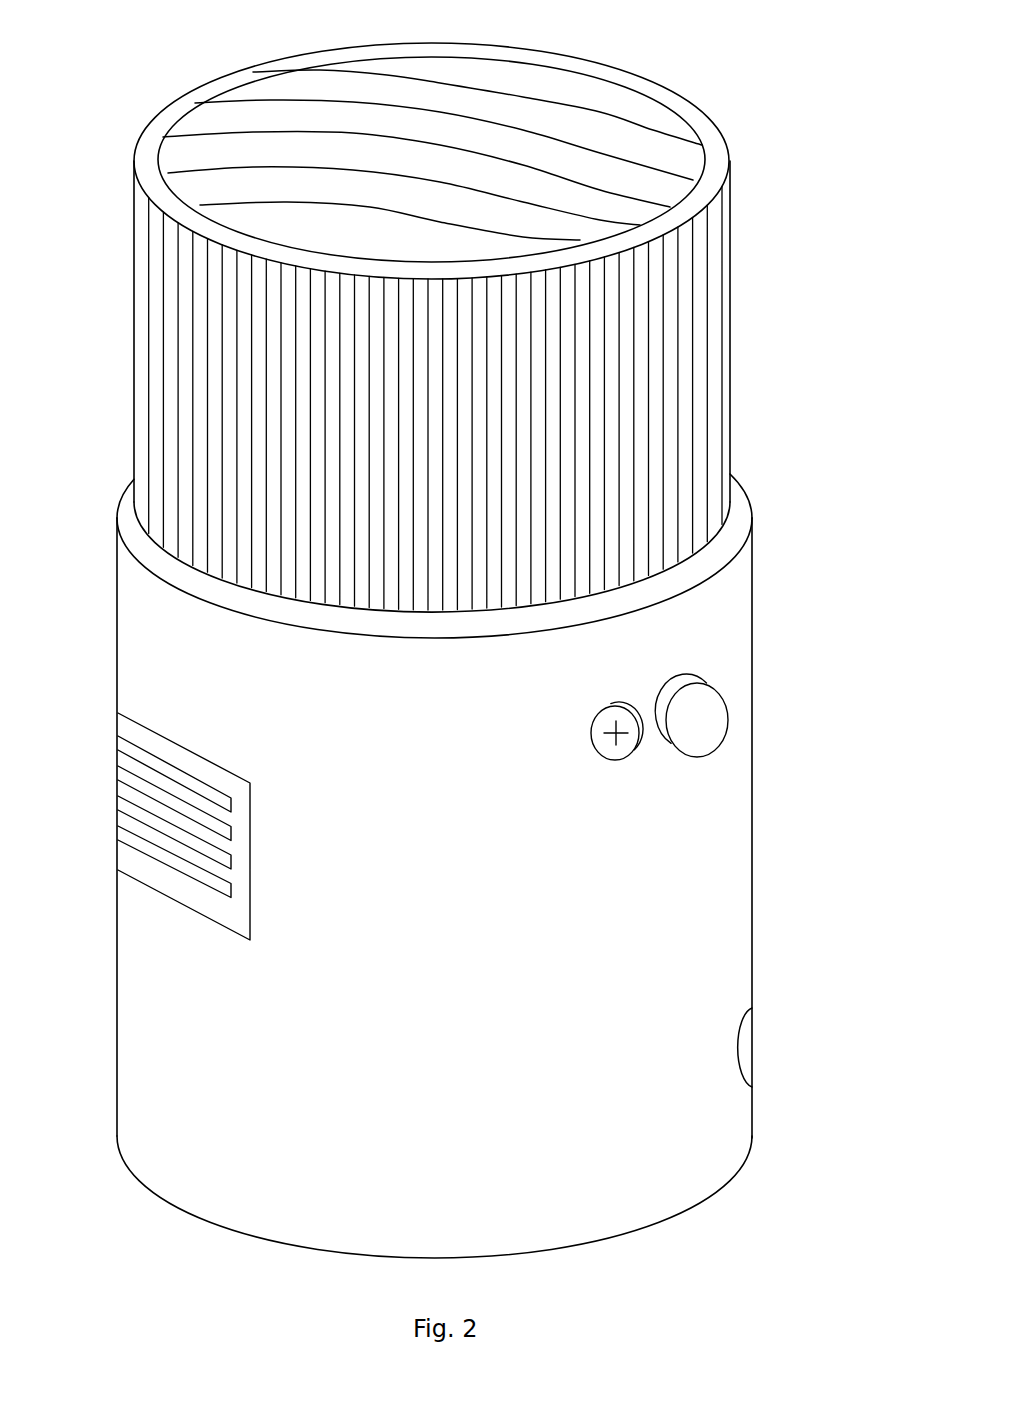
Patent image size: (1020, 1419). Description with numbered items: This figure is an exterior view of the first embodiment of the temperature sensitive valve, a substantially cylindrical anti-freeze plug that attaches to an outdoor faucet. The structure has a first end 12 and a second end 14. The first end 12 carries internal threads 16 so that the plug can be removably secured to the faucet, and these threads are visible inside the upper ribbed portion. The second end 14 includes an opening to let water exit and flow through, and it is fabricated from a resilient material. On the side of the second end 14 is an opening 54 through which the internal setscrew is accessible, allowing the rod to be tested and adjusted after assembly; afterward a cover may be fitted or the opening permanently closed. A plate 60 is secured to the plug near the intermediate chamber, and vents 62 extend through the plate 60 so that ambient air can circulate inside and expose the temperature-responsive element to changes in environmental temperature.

The first end 12 is at (715, 358).
The internal threads 16 is at (598, 118).
The second end 14 is at (717, 1007).
The opening 54 is at (747, 1055).
The plate 60 is at (158, 877).
The vents 62 is at (127, 775).